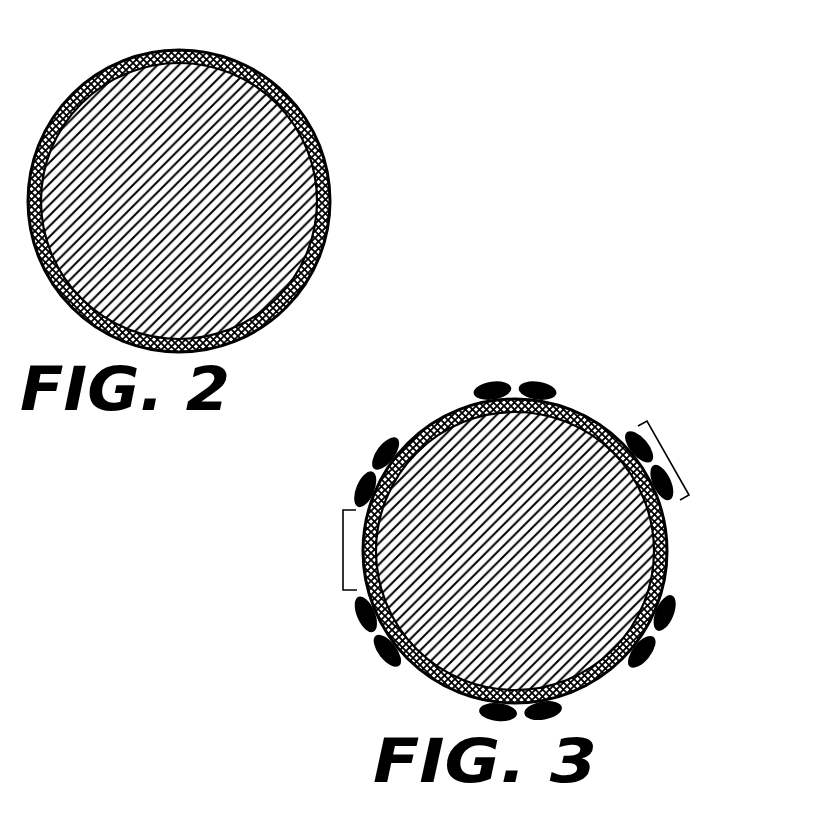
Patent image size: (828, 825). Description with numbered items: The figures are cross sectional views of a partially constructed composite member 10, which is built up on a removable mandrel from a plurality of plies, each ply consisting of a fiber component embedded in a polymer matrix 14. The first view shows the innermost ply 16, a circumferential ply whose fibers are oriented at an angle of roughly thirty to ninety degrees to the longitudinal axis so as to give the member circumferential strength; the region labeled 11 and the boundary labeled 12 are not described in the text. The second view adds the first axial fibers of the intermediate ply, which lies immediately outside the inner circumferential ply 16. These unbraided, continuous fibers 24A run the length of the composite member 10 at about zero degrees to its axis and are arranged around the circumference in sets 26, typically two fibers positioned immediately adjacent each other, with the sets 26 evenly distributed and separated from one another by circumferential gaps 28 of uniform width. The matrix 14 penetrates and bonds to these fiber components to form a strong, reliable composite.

In FIG. 2, the composite member 10 is at (91, 59).
In FIG. 3, the composite member 10 is at (450, 370).
In FIG. 2, the core body 11 is at (260, 255).
In FIG. 2, the outer surface layer 12 is at (308, 125).
In FIG. 2, the matrix 14 is at (270, 83).
In FIG. 2, the innermost ply 16 is at (173, 44).
In FIG. 3, the unbraided continuous fibers 24A is at (537, 388).
In FIG. 3, the sets 26 is at (663, 460).
In FIG. 3, the gaps 28 is at (343, 549).